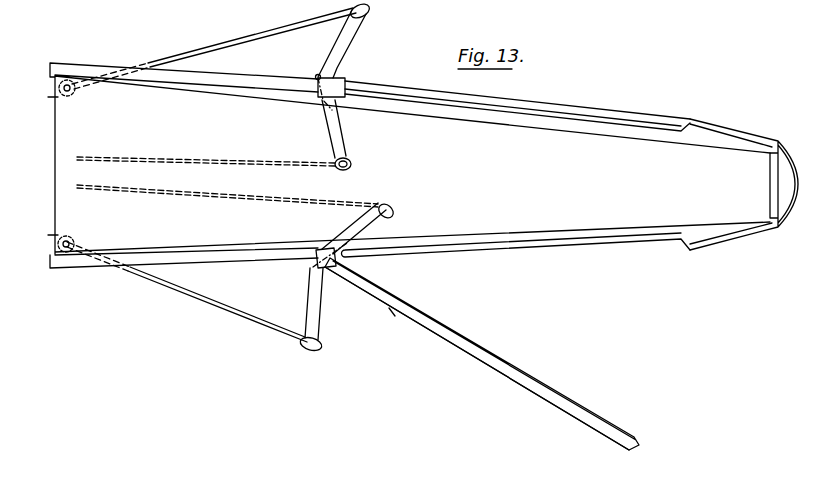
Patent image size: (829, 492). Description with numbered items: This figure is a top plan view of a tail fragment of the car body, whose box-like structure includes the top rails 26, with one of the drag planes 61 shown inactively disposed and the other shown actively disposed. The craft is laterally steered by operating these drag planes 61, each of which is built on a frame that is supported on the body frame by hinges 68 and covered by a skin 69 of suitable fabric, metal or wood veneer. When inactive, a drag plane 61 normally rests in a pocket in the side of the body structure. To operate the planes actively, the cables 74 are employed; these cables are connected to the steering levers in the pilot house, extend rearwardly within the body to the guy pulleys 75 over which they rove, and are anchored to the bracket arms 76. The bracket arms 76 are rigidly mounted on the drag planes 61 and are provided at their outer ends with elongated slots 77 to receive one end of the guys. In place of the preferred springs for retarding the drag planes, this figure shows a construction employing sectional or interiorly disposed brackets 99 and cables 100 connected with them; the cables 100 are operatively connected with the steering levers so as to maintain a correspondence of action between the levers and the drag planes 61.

The top rails 26 is at (93, 262).
The drag planes 61 is at (623, 118).
The hinges 68 is at (320, 77).
The skin 69 is at (525, 384).
The cables 74 is at (250, 42).
The guy pulleys 75 is at (72, 98).
The bracket arms 76 is at (338, 47).
The elongated slots 77 is at (321, 350).
The brackets 99 is at (335, 142).
The cables 100 is at (250, 160).